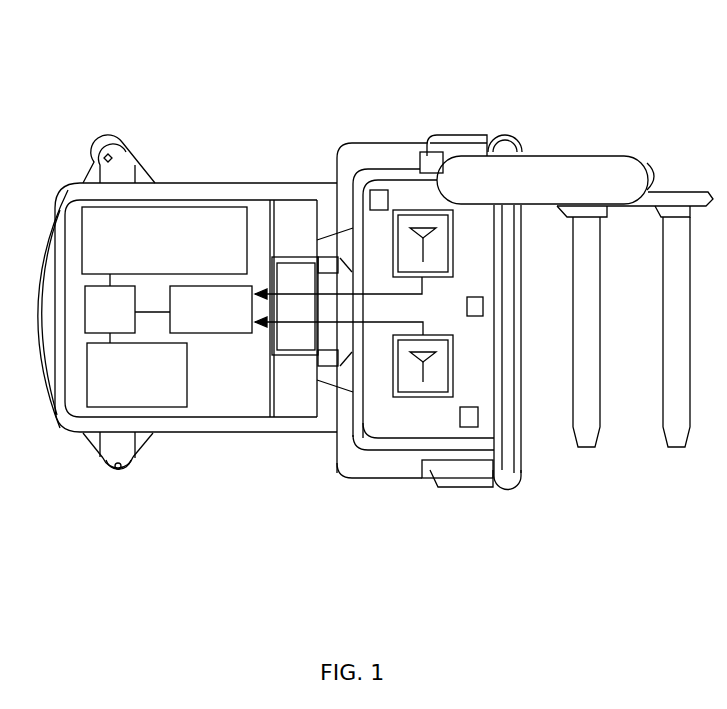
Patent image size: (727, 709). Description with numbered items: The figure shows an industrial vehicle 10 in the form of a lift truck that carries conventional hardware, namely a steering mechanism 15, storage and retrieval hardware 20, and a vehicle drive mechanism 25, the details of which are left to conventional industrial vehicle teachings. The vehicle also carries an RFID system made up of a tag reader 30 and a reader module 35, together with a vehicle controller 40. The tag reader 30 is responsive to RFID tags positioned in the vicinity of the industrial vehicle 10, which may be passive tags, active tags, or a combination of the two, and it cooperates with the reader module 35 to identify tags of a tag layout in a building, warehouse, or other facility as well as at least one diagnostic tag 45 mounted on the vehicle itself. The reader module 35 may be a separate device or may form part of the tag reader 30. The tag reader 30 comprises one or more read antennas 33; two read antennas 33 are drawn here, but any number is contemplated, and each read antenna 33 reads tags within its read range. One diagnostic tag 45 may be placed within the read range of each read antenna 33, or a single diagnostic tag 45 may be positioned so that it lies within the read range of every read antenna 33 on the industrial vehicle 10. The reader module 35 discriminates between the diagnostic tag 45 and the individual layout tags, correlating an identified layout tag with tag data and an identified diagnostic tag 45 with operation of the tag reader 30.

The industrial vehicle 10 is at (216, 70).
The steering mechanism 15 is at (175, 207).
The storage and retrieval hardware 20 is at (622, 128).
The vehicle drive mechanism 25 is at (152, 410).
The tag reader 30 is at (453, 353).
The read antenna 33 is at (413, 210).
The reader module 35 is at (204, 334).
The vehicle controller 40 is at (86, 318).
The diagnostic tag 45 is at (372, 193).